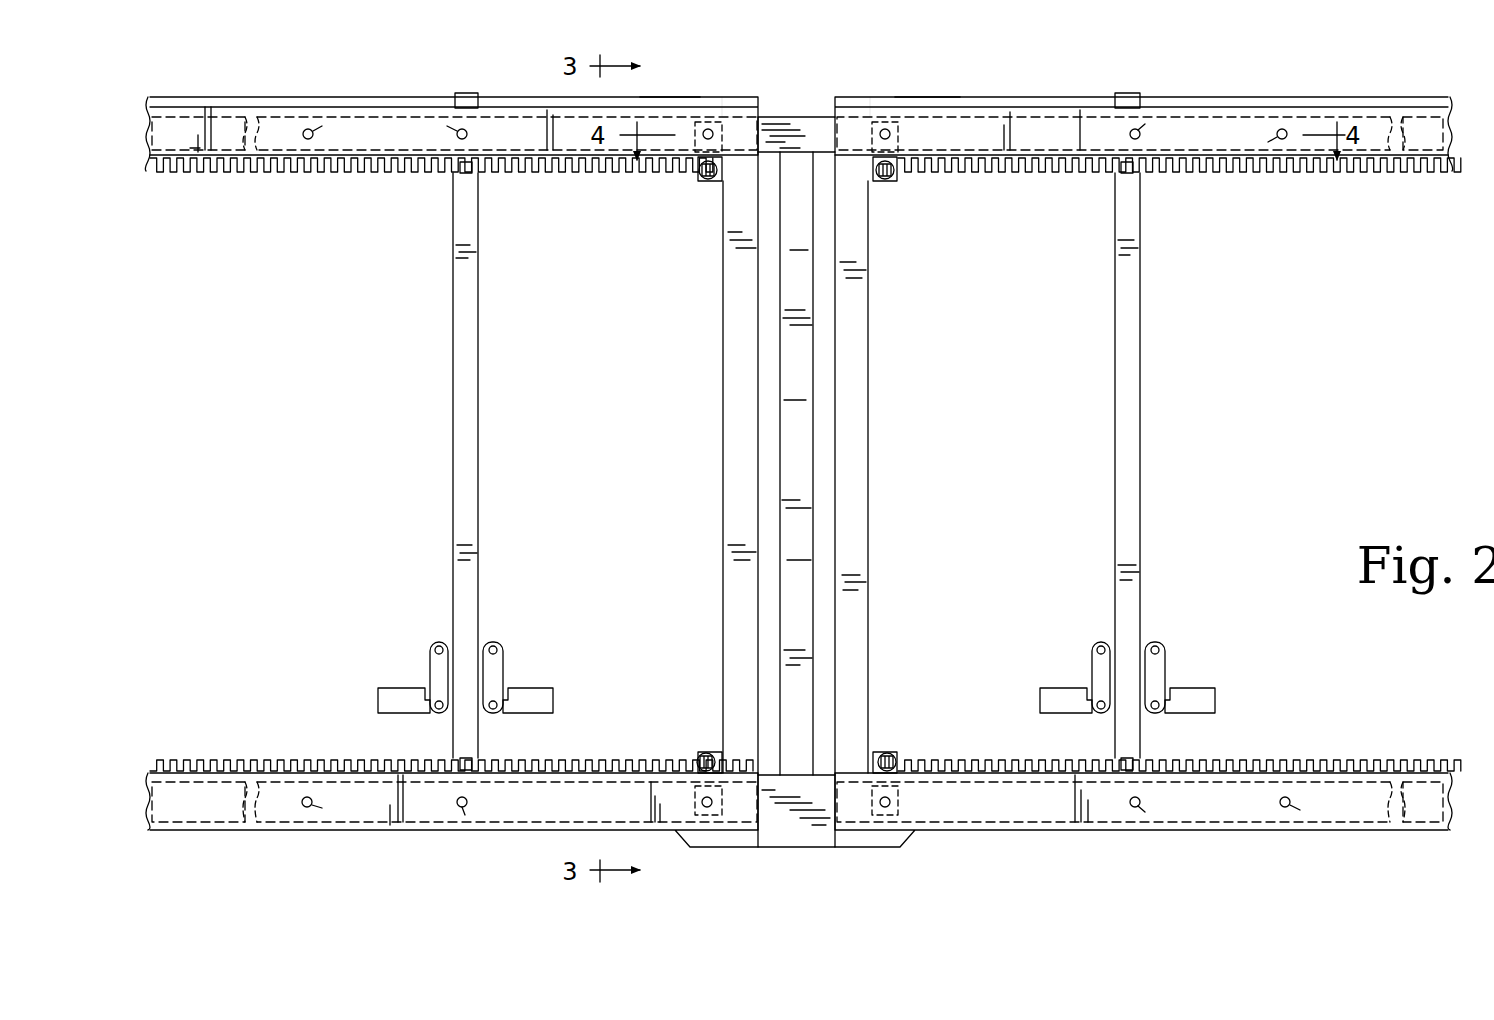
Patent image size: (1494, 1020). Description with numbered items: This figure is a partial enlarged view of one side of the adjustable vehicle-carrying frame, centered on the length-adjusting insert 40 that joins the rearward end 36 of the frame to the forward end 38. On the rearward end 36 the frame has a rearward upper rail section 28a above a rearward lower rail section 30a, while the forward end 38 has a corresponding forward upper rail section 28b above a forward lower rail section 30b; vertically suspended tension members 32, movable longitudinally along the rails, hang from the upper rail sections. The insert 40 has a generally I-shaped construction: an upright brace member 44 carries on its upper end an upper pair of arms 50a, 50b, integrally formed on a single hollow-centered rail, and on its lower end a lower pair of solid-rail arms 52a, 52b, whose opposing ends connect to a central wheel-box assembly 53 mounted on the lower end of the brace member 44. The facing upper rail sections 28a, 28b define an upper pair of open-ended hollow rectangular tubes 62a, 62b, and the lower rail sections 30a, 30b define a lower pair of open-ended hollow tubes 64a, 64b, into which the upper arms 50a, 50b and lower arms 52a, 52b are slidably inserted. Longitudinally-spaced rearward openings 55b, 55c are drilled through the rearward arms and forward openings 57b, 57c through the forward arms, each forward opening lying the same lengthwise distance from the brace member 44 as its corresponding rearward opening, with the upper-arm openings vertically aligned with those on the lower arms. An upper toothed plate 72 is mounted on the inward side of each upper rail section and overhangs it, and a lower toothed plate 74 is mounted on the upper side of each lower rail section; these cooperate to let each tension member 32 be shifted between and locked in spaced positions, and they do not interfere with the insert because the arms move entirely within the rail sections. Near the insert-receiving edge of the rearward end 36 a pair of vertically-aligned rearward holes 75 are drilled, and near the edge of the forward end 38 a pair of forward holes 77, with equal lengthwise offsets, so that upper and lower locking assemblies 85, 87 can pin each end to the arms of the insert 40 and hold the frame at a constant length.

The rearward upper rail section 28a is at (532, 105).
The forward upper rail section 28b is at (1072, 103).
The rearward lower rail section 30a is at (557, 832).
The forward lower rail section 30b is at (966, 832).
The tension member 32 is at (479, 355).
The rearward end of the frame 36 is at (684, 93).
The forward end of the frame 38 is at (921, 93).
The length-adjusting insert 40 is at (800, 113).
The upright brace member 44 is at (815, 440).
The upper arm 50a is at (290, 100).
The upper arm 50b is at (1316, 100).
The lower arm 52a is at (311, 822).
The lower arm 52b is at (1196, 832).
The central wheel-box assembly 53 is at (806, 848).
The rearward opening 55b is at (454, 128).
The rearward opening 55c is at (327, 128).
The forward opening 57b is at (1142, 128).
The forward opening 57c is at (1279, 130).
The upper open-ended hollow rectangular tube 62a is at (766, 114).
The upper open-ended hollow rectangular tube 62b is at (831, 114).
The lower open-ended hollow tube 64a is at (766, 770).
The lower open-ended hollow tube 64b is at (828, 770).
The upper toothed plate 72 is at (581, 183).
The lower toothed plate 74 is at (546, 760).
The rearward hole 75 is at (701, 138).
The forward hole 77 is at (893, 140).
The upper locking assembly 85 is at (707, 184).
The lower locking assembly 87 is at (703, 751).